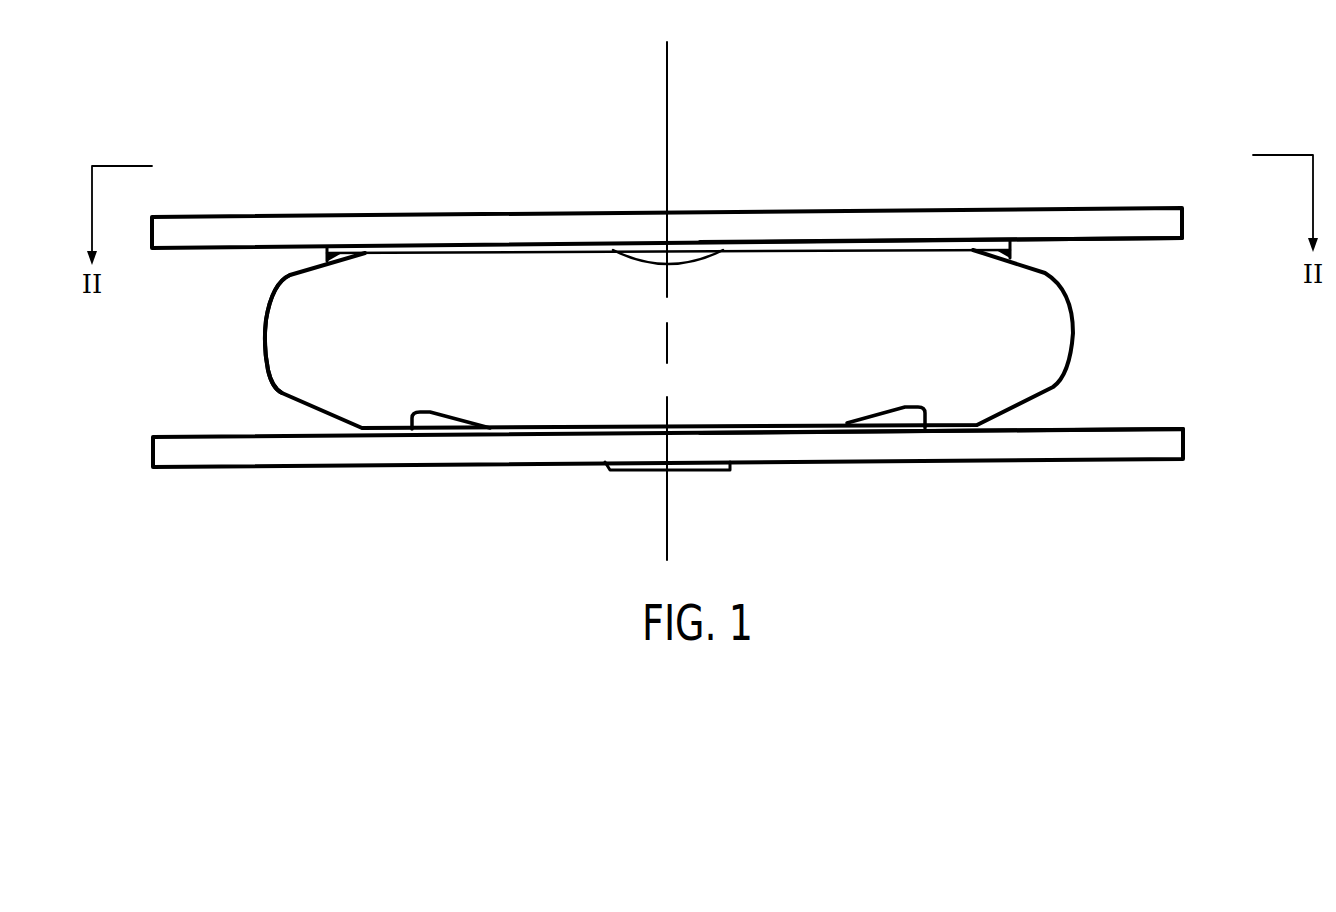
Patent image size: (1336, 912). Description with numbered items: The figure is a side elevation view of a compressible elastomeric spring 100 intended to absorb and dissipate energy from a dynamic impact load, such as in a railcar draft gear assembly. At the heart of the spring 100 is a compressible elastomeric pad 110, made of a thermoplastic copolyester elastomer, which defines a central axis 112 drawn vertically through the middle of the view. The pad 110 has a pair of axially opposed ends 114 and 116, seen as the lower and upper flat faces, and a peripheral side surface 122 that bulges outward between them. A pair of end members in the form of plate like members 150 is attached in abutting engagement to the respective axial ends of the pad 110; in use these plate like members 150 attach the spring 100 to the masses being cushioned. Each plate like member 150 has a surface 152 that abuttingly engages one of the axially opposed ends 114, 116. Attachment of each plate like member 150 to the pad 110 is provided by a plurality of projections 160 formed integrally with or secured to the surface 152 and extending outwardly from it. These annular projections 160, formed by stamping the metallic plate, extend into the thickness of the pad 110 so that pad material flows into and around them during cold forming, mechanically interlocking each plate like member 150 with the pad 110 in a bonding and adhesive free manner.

The compressible elastomeric spring 100 is at (706, 290).
The compressible elastomeric pad 110 is at (1086, 335).
The central axis 112 is at (667, 76).
The axially opposed end 114 is at (372, 430).
The axially opposed end 116 is at (358, 254).
The peripheral side surface 122 is at (266, 342).
The plate like member 150 is at (1130, 200).
The surface 152 is at (1137, 240).
The projection 160 is at (323, 260).